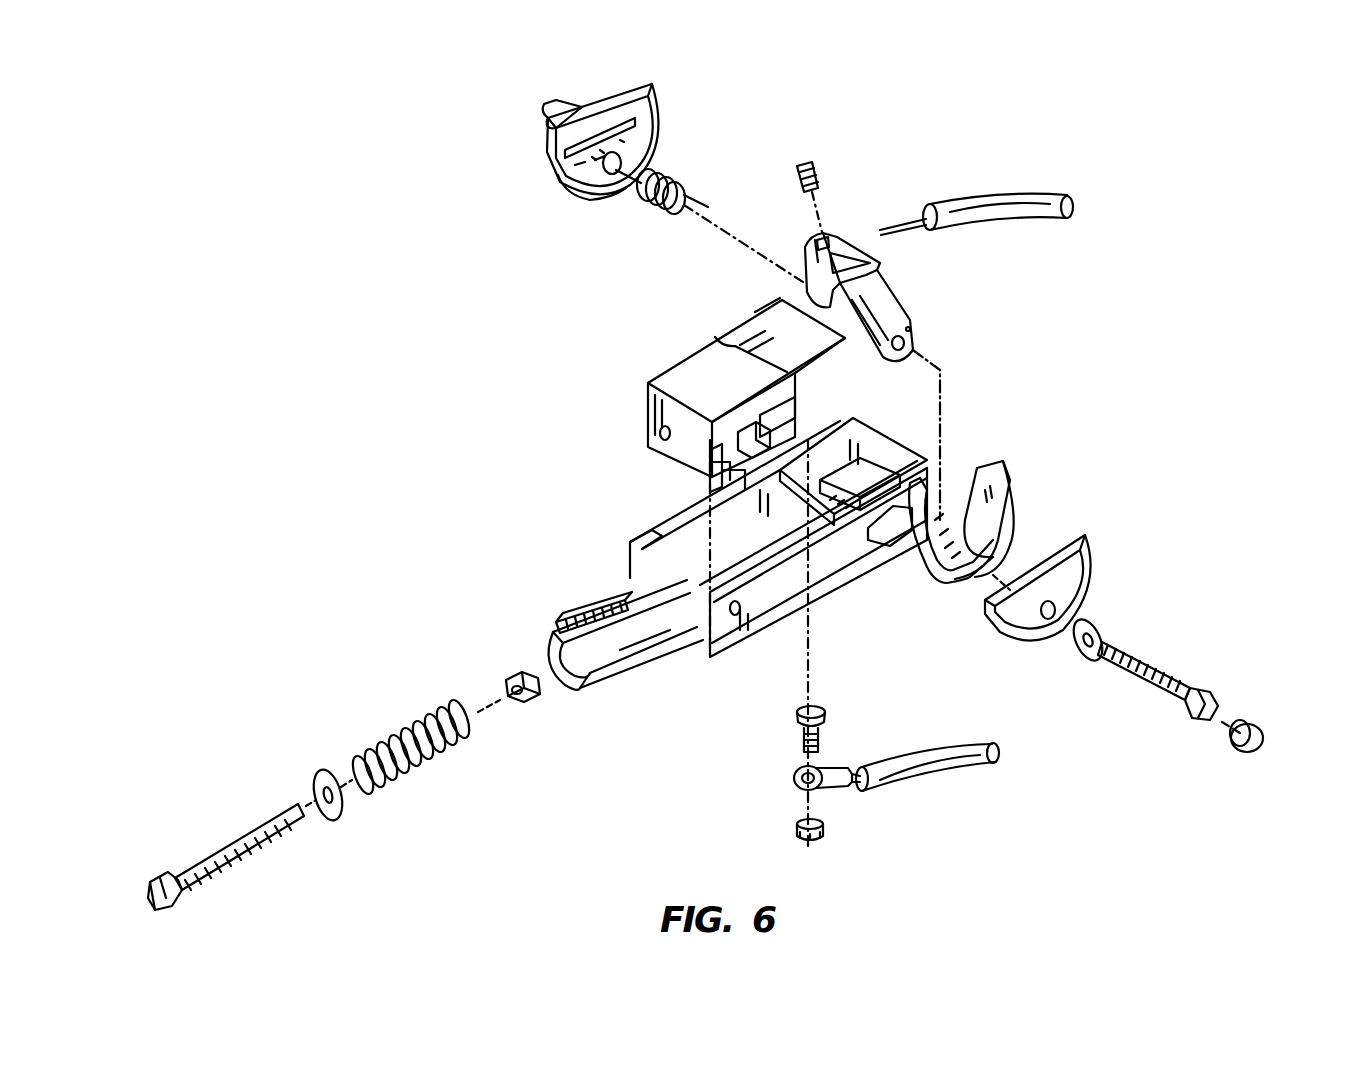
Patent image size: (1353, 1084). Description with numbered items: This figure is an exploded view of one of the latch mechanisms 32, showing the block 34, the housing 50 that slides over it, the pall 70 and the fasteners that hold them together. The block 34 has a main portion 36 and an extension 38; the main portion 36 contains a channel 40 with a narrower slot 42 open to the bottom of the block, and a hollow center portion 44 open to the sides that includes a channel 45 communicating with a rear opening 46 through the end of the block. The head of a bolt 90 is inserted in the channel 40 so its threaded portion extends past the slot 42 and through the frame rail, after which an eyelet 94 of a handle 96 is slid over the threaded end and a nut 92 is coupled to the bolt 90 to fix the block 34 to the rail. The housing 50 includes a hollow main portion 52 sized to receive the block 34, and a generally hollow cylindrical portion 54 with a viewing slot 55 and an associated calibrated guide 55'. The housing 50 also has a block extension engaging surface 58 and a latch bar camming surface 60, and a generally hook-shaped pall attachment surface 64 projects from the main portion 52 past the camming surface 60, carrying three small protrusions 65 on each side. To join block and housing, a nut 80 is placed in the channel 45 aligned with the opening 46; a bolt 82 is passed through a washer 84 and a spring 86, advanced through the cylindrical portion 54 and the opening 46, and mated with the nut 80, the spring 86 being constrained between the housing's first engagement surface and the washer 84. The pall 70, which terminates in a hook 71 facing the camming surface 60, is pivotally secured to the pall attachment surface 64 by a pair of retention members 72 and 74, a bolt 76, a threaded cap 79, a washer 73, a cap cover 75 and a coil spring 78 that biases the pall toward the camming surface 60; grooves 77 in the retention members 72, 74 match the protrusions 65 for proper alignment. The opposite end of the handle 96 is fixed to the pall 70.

The latch mechanism 32 is at (903, 147).
The block 34 is at (610, 404).
The main portion 36 is at (692, 367).
The extension 38 is at (760, 318).
The channel 40 is at (772, 440).
The narrower slot 42 is at (745, 484).
The hollow center portion 44 is at (782, 410).
The channel 45 is at (700, 468).
The rear opening 46 is at (660, 434).
The housing 50 is at (716, 656).
The hollow main portion 52 is at (745, 620).
The cylindrical portion 54 is at (625, 655).
The viewing slot 55 is at (566, 597).
The calibrated guide 55' is at (592, 585).
The block extension engaging surface 58 is at (832, 462).
The latch bar camming surface 60 is at (912, 486).
The pall attachment surface 64 is at (965, 498).
The protrusions 65 is at (955, 580).
The pall 70 is at (810, 243).
The hook 71 is at (853, 300).
The retention member 72 is at (1088, 538).
The washer 73 is at (1055, 612).
The retention member 74 is at (646, 110).
The cap cover 75 is at (1242, 720).
The bolt 76 is at (1142, 670).
The grooves 77 is at (576, 185).
The coil spring 78 is at (668, 176).
The threaded cap 79 is at (550, 120).
The nut 80 is at (506, 678).
The bolt 82 is at (235, 836).
The washer 84 is at (320, 774).
The spring 86 is at (412, 730).
The bolt 90 is at (826, 728).
The nut 92 is at (825, 838).
The eyelet 94 is at (830, 772).
The handle 96 is at (1012, 196).